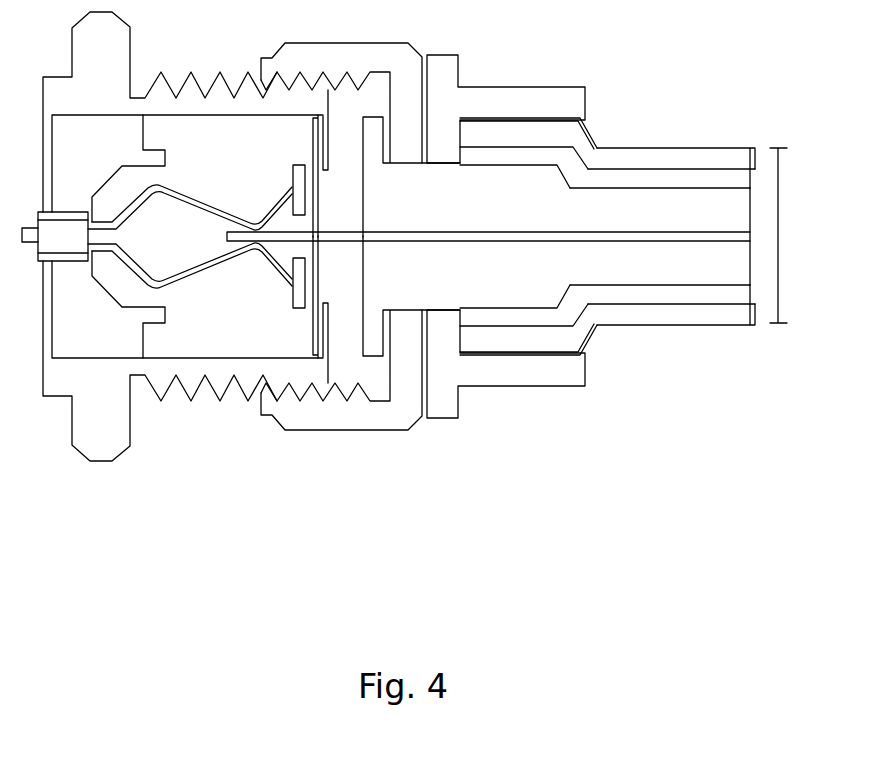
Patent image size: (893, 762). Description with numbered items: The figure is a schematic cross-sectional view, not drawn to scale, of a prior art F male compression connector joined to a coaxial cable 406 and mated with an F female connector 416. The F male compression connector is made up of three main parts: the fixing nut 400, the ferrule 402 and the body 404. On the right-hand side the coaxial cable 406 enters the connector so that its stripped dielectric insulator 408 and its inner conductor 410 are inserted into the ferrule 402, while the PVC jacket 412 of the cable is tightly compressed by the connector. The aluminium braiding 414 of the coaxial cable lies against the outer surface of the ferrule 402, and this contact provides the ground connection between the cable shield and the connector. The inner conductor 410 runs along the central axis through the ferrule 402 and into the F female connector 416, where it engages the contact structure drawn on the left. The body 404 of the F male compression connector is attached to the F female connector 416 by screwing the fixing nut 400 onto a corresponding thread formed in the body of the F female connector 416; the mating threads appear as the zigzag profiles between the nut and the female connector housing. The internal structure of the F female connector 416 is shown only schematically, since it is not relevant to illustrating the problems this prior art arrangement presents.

The fixing nut 400 is at (328, 67).
The ferrule 402 is at (502, 180).
The body 404 is at (507, 108).
The coaxial cable 406 is at (801, 235).
The dielectric insulator 408 is at (652, 263).
The inner conductor 410 is at (347, 241).
The PVC jacket 412 is at (735, 160).
The aluminium braiding 414 is at (647, 183).
The F female connector 416 is at (189, 347).